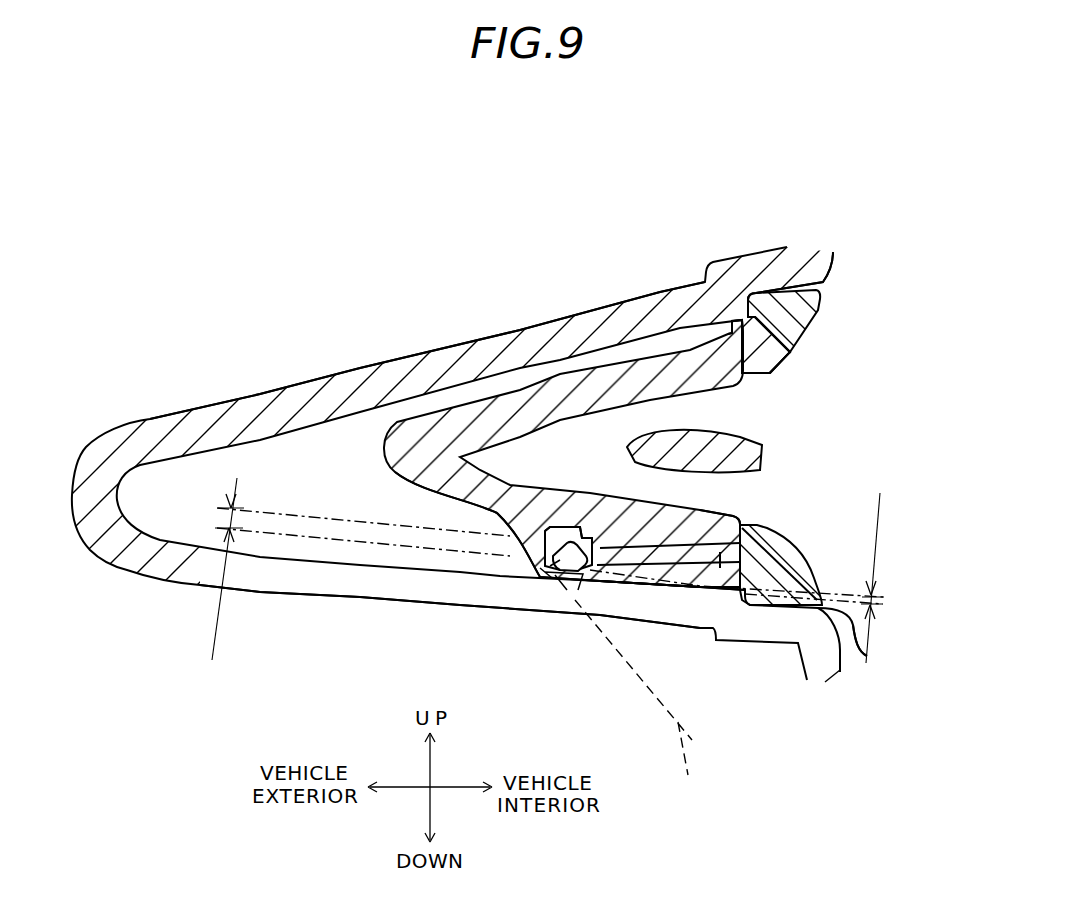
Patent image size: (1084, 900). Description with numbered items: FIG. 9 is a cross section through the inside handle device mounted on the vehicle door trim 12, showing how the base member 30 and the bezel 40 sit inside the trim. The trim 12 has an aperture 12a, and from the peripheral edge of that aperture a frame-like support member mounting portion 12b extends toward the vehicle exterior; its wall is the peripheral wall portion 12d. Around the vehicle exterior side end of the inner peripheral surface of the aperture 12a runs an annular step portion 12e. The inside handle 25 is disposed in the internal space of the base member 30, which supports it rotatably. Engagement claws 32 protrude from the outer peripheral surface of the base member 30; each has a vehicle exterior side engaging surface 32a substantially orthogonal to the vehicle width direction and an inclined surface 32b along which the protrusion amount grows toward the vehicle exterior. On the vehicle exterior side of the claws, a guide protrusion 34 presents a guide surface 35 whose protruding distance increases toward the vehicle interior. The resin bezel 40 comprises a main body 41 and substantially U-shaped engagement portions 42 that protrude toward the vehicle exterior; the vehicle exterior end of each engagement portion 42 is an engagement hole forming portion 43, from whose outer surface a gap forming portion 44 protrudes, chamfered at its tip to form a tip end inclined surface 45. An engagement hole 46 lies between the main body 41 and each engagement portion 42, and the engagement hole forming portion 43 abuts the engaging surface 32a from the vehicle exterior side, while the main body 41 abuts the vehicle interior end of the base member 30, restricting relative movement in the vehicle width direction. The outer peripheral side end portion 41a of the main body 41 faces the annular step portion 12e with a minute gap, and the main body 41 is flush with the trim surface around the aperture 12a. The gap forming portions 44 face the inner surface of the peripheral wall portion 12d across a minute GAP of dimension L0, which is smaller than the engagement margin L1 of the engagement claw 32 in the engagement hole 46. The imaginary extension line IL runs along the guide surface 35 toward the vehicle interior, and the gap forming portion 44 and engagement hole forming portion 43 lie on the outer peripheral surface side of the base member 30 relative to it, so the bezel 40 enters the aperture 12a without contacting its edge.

The trim 12 is at (843, 673).
The aperture 12a is at (823, 284).
The support member mounting portion 12b is at (445, 353).
The peripheral wall portion 12d is at (322, 590).
The annular step portion 12e is at (787, 357).
The inside handle 25 is at (760, 441).
The base member 30 is at (553, 390).
The engagement claw 32 is at (630, 580).
The engaging surface 32a is at (586, 543).
The inclined surface 32b is at (662, 585).
The guide protrusion 34 is at (520, 560).
The guide surface 35 is at (487, 528).
The bezel 40 is at (810, 326).
The main body 41 is at (790, 560).
The outer peripheral side end portion 41a is at (765, 310).
The engagement portion 42 is at (720, 563).
The engagement hole forming portion 43 is at (560, 530).
The gap forming portion 44 is at (580, 585).
The tip end inclined surface 45 is at (562, 572).
The engagement hole 46 is at (703, 573).
The dimension L1 is at (212, 569).
The minute dimension L0 is at (883, 578).
The gap GAP is at (867, 656).
The imaginary extension line IL is at (636, 704).